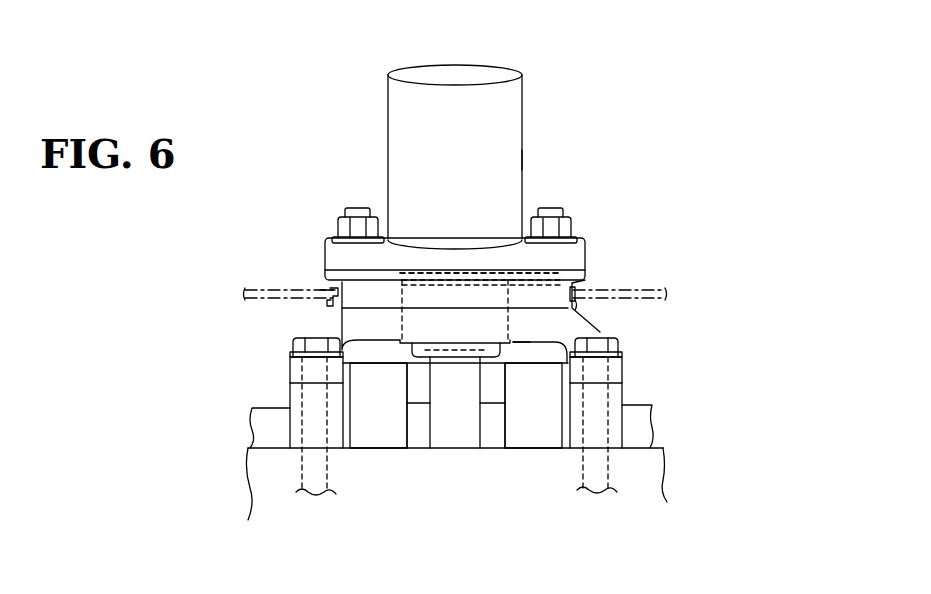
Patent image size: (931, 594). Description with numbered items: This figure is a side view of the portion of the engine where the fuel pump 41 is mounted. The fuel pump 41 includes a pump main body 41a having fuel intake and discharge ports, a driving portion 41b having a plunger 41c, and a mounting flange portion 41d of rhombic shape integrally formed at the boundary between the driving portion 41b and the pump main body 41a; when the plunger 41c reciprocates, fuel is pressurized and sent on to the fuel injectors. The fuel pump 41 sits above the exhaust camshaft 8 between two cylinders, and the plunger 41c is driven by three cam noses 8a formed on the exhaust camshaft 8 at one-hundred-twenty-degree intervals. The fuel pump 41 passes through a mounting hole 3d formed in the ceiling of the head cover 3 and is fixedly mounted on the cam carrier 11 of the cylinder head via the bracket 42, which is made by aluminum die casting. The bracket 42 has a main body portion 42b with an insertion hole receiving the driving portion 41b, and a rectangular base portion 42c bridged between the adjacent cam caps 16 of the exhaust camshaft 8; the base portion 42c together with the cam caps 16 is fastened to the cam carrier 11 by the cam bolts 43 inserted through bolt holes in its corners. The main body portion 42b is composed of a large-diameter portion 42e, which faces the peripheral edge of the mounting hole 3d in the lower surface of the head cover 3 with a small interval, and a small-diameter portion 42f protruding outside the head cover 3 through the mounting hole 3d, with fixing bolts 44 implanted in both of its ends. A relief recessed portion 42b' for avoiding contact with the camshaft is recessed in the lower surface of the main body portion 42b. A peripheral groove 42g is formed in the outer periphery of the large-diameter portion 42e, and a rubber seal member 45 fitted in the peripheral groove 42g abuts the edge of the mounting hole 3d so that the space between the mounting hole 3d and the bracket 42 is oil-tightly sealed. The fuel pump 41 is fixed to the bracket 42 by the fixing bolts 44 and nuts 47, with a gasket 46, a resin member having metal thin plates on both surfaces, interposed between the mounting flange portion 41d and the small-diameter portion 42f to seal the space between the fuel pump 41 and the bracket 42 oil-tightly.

The head cover 3 is at (252, 290).
The mounting hole 3d is at (330, 291).
The exhaust camshaft 8 is at (258, 406).
The cam noses 8a is at (488, 385).
The cam carrier 11 is at (250, 494).
The cam caps 16 is at (650, 398).
The fuel pump 41 is at (388, 133).
The pump main body 41a is at (522, 160).
The driving portion 41b is at (402, 345).
The plunger 41c is at (421, 363).
The mounting flange portion 41d is at (590, 250).
The bracket 42 is at (600, 323).
The main body portion 42b is at (627, 273).
The relief recessed portion 42b' is at (556, 441).
The base portion 42c is at (625, 366).
The large-diameter portion 42e is at (592, 310).
The small-diameter portion 42f is at (572, 278).
The peripheral groove 42g is at (335, 310).
The cam bolts 43 is at (293, 346).
The fixing bolts 44 is at (352, 208).
The rubber seal member 45 is at (575, 300).
The gasket 46 is at (588, 276).
The nuts 47 is at (340, 224).